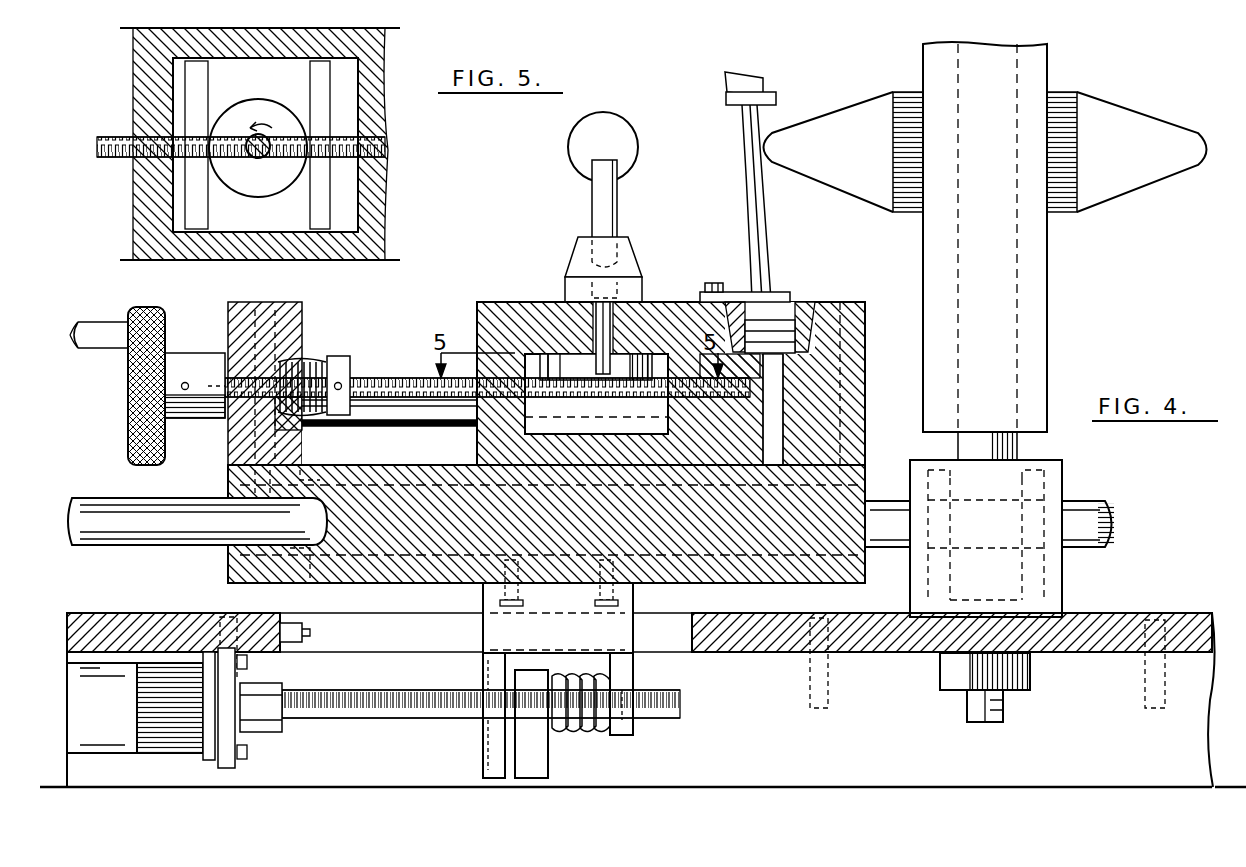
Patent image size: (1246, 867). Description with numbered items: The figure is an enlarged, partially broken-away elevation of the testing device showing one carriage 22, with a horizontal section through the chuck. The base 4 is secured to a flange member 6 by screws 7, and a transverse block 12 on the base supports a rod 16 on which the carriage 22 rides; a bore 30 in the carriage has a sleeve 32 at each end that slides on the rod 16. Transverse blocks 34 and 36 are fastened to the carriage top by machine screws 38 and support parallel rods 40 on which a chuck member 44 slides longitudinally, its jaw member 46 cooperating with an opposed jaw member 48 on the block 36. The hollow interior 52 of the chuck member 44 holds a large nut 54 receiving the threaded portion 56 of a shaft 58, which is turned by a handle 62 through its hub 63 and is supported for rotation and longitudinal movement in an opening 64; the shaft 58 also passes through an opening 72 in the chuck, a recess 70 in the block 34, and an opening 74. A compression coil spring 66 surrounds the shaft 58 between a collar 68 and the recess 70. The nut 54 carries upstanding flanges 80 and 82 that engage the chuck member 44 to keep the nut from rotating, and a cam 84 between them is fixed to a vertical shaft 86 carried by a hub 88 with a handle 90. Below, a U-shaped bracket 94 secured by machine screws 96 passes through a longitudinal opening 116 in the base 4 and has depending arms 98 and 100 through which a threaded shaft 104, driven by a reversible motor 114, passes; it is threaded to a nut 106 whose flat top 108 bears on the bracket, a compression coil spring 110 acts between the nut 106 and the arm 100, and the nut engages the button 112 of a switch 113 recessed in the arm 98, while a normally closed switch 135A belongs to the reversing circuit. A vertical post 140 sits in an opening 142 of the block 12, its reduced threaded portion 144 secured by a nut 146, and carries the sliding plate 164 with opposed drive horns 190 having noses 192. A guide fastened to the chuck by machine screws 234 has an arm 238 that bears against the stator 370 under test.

In FIG. 4, the base 4 is at (132, 622).
In FIG. 4, the flange member 6 is at (886, 731).
In FIG. 4, the screws 7 is at (222, 624).
In FIG. 4, the transverse block 12 is at (1052, 578).
In FIG. 4, the rod 16 is at (160, 532).
In FIG. 4, the carriage 22 is at (255, 583).
In FIG. 4, the bore 30 is at (450, 582).
In FIG. 4, the sleeve 32 is at (292, 578).
In FIG. 4, the transverse block 34 is at (303, 336).
In FIG. 4, the transverse block 36 is at (872, 372).
In FIG. 4, the machine screws 38 is at (270, 306).
In FIG. 4, the rod 40 is at (382, 413).
In FIG. 5, the chuck member 44 is at (142, 199).
In FIG. 4, the chuck member 44 is at (487, 318).
In FIG. 4, the jaw member 46 is at (731, 300).
In FIG. 4, the jaw member 48 is at (797, 300).
In FIG. 4, the hollow interior 52 is at (478, 430).
In FIG. 4, the nut 54 is at (620, 421).
In FIG. 4, the threaded portion 56 is at (653, 428).
In FIG. 5, the shaft 58 is at (116, 145).
In FIG. 4, the shaft 58 is at (396, 382).
In FIG. 4, the handle 62 is at (102, 330).
In FIG. 4, the hub 63 is at (190, 420).
In FIG. 4, the opening 64 is at (716, 369).
In FIG. 4, the compression coil spring 66 is at (310, 422).
In FIG. 4, the collar 68 is at (346, 372).
In FIG. 4, the recess 70 is at (311, 364).
In FIG. 4, the opening 72 is at (482, 348).
In FIG. 4, the opening 74 is at (242, 372).
In FIG. 5, the transverse flange 80 is at (205, 197).
In FIG. 4, the transverse flange 80 is at (545, 335).
In FIG. 5, the transverse flange 82 is at (340, 207).
In FIG. 4, the transverse flange 82 is at (674, 335).
In FIG. 5, the cam 84 is at (249, 105).
In FIG. 4, the cam 84 is at (558, 372).
In FIG. 5, the vertical shaft 86 is at (262, 158).
In FIG. 4, the vertical shaft 86 is at (624, 372).
In FIG. 4, the hub 88 is at (628, 262).
In FIG. 4, the handle 90 is at (610, 128).
In FIG. 4, the U-shaped bracket 94 is at (618, 647).
In FIG. 4, the machine screws 96 is at (636, 590).
In FIG. 4, the arm 98 is at (482, 684).
In FIG. 4, the arm 100 is at (633, 682).
In FIG. 4, the threaded shaft 104 is at (384, 715).
In FIG. 4, the nut 106 is at (549, 750).
In FIG. 4, the top 108 is at (530, 672).
In FIG. 4, the compression coil spring 110 is at (602, 740).
In FIG. 4, the button 112 is at (490, 760).
In FIG. 4, the switch 113 is at (490, 772).
In FIG. 4, the reversible motor 114 is at (130, 706).
In FIG. 4, the longitudinal opening 116 is at (690, 636).
In FIG. 4, the normally closed switch 135A is at (312, 633).
In FIG. 4, the vertical post 140 is at (1000, 312).
In FIG. 4, the opening 142 is at (1064, 483).
In FIG. 4, the reduced threaded portion 144 is at (1003, 708).
In FIG. 4, the nut 146 is at (1030, 677).
In FIG. 4, the plate 164 is at (1047, 346).
In FIG. 4, the drive horn 190 is at (832, 190).
In FIG. 4, the nose 192 is at (778, 138).
In FIG. 4, the machine screws 234 is at (710, 283).
In FIG. 4, the arm 238 is at (787, 295).
In FIG. 4, the stator 370 is at (748, 190).